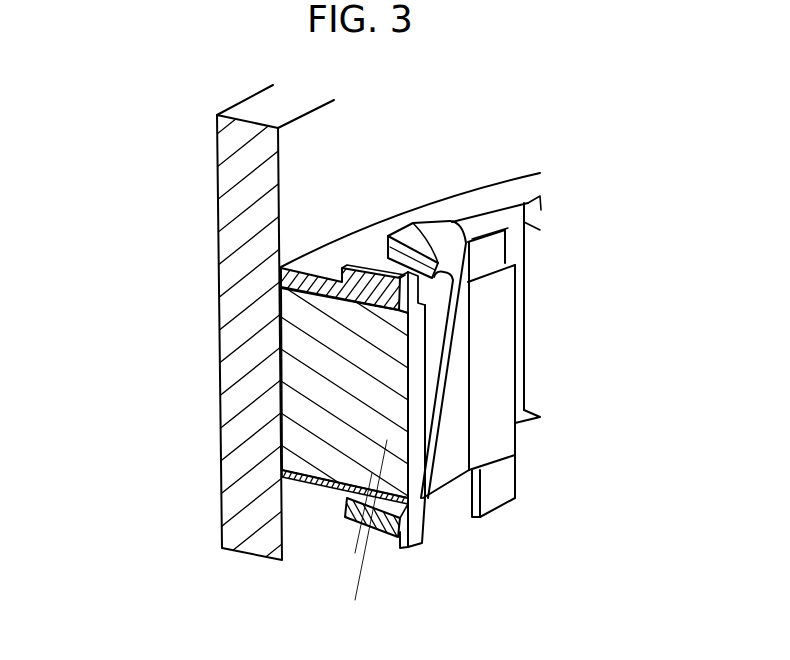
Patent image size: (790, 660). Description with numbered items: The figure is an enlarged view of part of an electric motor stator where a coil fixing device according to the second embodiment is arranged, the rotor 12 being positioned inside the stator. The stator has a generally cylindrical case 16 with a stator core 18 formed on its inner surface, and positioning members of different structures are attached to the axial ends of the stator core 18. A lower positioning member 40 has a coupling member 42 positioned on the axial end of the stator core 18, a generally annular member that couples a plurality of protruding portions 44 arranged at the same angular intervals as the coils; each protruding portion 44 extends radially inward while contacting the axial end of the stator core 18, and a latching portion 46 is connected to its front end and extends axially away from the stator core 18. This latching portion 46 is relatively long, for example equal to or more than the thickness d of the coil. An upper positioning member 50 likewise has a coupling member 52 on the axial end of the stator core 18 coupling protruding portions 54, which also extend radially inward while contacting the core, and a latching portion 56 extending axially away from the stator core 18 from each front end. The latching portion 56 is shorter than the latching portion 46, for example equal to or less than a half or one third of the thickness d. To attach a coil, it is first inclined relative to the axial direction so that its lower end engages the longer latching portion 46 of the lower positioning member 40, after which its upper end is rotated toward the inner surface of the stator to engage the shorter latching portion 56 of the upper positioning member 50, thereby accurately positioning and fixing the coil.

The rotor 12 is at (176, 213).
The case 16 is at (262, 110).
The stator core 18 is at (320, 375).
The lower positioning member 40 is at (323, 496).
The coupling member 42 is at (302, 475).
The protruding portion 44 is at (380, 533).
The latching portion 46 is at (418, 530).
The upper positioning member 50 is at (441, 164).
The coupling member 52 is at (328, 262).
The protruding portion 54 is at (360, 297).
The latching portion 56 is at (410, 290).
The thickness of coil d is at (361, 520).